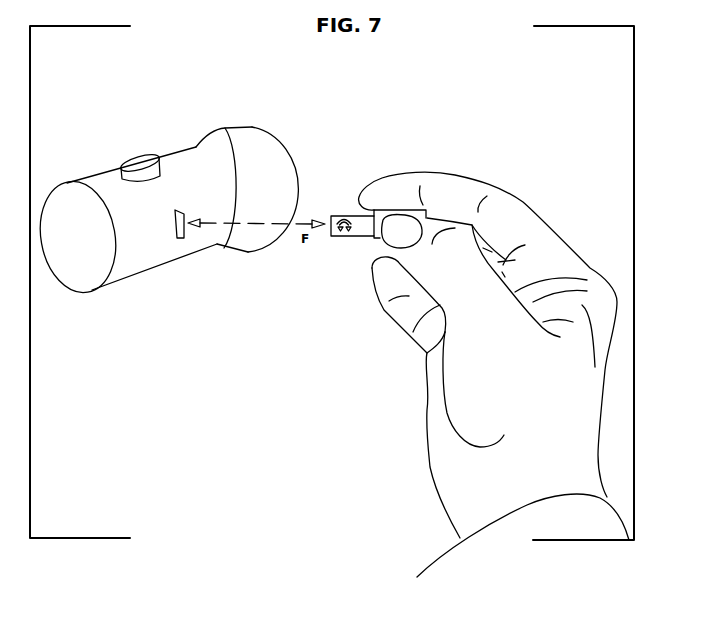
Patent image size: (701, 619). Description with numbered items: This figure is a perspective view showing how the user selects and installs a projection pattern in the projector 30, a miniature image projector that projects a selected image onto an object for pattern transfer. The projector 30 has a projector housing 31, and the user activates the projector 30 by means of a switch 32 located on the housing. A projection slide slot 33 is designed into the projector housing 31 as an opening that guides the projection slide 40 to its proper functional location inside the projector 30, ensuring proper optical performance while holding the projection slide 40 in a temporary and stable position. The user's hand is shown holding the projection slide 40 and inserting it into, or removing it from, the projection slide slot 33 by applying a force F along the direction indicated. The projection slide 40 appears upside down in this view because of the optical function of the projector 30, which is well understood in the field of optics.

The projector 30 is at (165, 222).
The projector housing 31 is at (147, 232).
The switch 32 is at (140, 160).
The projection slide slot 33 is at (180, 209).
The projection slide 40 is at (362, 220).